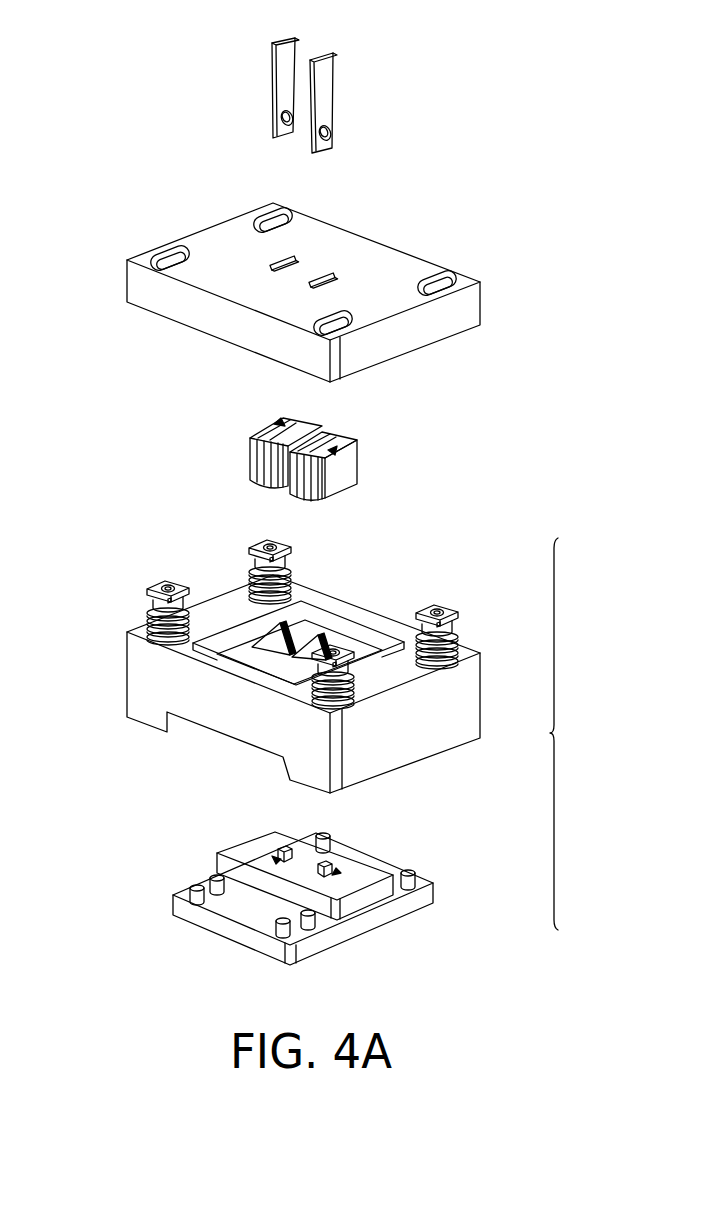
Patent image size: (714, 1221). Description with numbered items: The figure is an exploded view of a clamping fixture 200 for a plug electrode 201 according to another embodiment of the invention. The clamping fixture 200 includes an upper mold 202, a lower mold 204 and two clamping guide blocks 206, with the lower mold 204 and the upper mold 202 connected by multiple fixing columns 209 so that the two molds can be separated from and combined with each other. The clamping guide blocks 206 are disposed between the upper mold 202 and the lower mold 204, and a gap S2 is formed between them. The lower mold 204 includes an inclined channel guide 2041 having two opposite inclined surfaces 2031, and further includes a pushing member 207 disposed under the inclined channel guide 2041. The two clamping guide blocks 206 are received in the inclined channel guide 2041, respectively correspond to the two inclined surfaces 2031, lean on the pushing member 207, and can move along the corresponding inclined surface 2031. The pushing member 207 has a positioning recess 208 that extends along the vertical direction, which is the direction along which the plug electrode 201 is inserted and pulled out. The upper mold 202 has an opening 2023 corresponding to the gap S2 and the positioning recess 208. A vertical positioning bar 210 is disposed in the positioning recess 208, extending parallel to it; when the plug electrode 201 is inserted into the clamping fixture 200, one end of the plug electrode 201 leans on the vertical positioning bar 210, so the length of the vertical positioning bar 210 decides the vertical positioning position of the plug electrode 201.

The clamping fixture 200 is at (112, 25).
The plug electrode 201 is at (285, 40).
The upper mold 202 is at (482, 300).
The opening 2023 is at (295, 258).
The clamping guide block 206 is at (257, 431).
The gap S2 is at (280, 424).
The lower mold 204 is at (365, 734).
The inclined channel guide 2041 is at (310, 660).
The inclined surface 2031 is at (272, 628).
The fixing column 209 is at (292, 561).
The pushing member 207 is at (377, 893).
The positioning recess 208 is at (275, 860).
The vertical positioning bar 210 is at (286, 848).